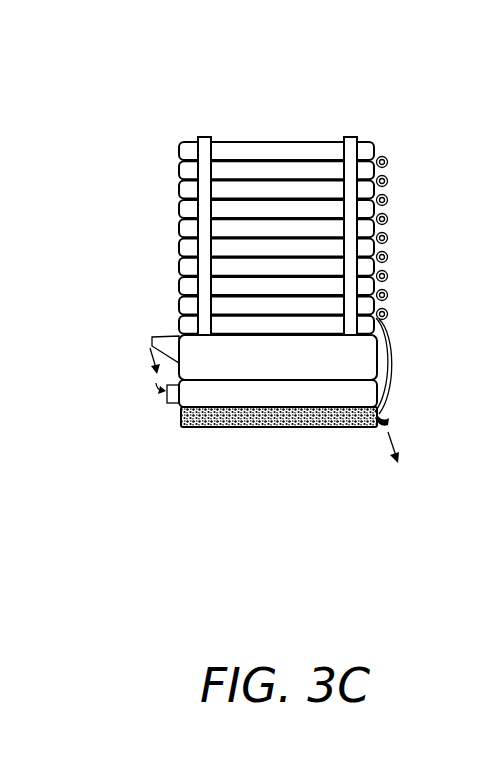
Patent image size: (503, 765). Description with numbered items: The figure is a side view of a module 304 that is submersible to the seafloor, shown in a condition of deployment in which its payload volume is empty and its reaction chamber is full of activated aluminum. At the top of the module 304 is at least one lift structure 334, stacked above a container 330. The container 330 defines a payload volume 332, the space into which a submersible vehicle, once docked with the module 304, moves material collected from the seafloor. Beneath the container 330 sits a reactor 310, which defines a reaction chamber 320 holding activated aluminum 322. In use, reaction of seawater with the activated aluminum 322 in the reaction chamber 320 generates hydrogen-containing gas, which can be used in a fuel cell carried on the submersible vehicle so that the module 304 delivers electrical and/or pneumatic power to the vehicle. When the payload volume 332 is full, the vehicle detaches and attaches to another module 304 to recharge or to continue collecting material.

The module 304 is at (204, 52).
The lift structure 334 is at (407, 143).
The container 330 is at (284, 295).
The payload volume 332 is at (203, 355).
The reactor 310 is at (307, 462).
The reaction chamber 320 is at (250, 392).
The activated aluminum 322 is at (283, 410).